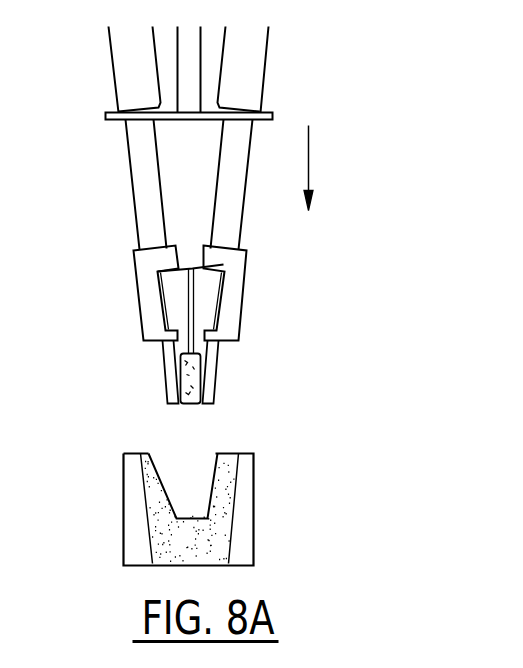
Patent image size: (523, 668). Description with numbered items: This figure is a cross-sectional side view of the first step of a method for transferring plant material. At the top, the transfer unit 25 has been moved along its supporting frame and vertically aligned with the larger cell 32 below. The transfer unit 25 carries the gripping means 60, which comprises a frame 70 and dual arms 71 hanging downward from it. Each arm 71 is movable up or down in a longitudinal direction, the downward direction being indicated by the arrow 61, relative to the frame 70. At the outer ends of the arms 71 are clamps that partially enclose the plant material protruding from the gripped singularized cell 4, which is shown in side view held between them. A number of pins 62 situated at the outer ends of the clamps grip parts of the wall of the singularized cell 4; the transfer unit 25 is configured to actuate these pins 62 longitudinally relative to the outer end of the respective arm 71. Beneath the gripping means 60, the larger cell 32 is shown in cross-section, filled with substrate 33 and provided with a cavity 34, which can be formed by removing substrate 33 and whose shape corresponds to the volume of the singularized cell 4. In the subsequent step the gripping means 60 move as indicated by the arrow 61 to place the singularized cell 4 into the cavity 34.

The transfer unit 25 is at (312, 76).
The frame 70 is at (188, 119).
The dual arms 71 is at (143, 216).
The gripping means 60 is at (312, 271).
The arrow 61 is at (308, 153).
The pins 62 is at (167, 363).
The singularized cell 4 is at (207, 372).
The cavity 34 is at (181, 455).
The substrate 33 is at (225, 458).
The larger cell 32 is at (250, 482).